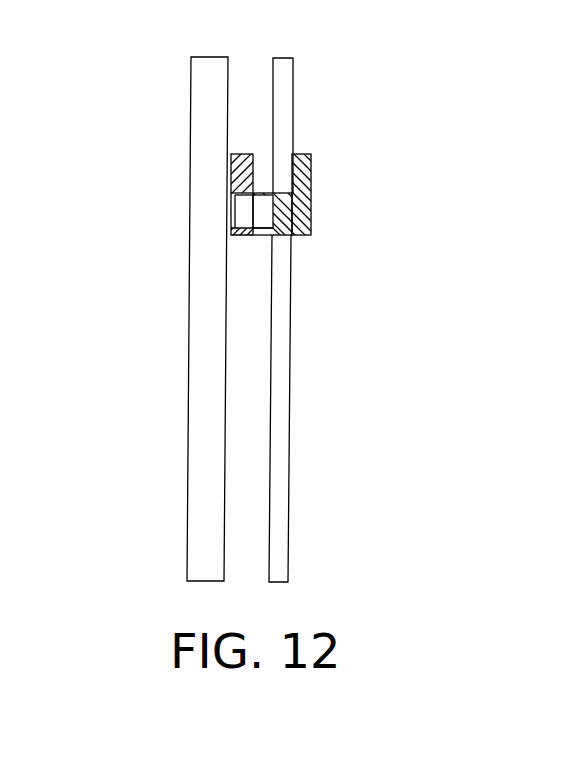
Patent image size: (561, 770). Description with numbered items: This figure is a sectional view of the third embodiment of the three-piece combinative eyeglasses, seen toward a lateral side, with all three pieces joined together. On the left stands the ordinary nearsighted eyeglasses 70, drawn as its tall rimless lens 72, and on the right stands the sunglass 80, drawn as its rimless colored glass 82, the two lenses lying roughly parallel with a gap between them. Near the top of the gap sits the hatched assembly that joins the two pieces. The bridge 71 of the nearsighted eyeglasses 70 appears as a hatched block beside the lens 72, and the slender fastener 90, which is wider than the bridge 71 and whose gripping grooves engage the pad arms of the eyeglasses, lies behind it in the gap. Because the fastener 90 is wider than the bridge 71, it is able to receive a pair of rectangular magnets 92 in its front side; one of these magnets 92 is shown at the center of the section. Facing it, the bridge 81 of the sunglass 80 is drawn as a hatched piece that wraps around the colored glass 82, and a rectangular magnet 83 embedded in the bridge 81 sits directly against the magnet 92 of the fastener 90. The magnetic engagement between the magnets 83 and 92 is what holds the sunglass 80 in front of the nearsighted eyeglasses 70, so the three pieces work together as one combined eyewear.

The ordinary nearsighted eyeglasses 70 is at (142, 319).
The bridge 71 is at (243, 154).
The rimless lenses 72 is at (189, 430).
The sunglass 80 is at (327, 320).
The bridge 81 is at (311, 176).
The rimless colored glasses 82 is at (280, 315).
The rectangular magnets 83 is at (310, 212).
The slender fastener 90 is at (241, 227).
The rectangular magnets 92 is at (268, 213).